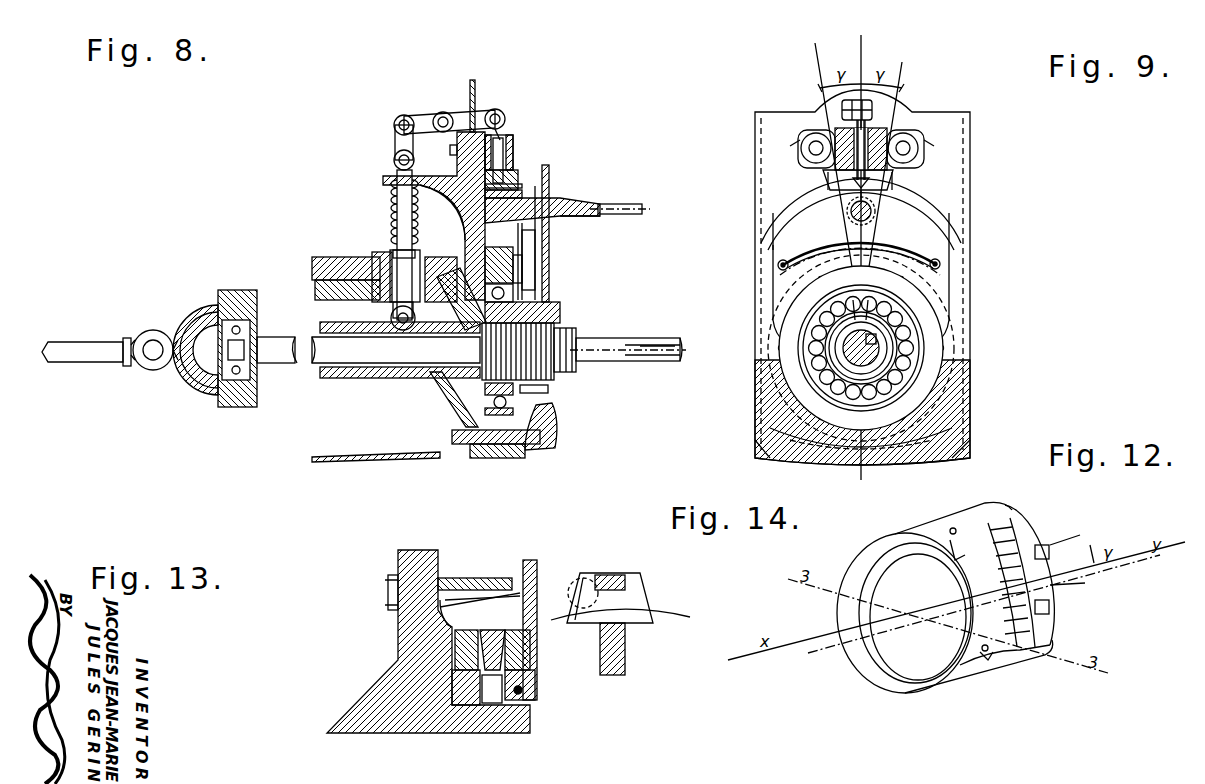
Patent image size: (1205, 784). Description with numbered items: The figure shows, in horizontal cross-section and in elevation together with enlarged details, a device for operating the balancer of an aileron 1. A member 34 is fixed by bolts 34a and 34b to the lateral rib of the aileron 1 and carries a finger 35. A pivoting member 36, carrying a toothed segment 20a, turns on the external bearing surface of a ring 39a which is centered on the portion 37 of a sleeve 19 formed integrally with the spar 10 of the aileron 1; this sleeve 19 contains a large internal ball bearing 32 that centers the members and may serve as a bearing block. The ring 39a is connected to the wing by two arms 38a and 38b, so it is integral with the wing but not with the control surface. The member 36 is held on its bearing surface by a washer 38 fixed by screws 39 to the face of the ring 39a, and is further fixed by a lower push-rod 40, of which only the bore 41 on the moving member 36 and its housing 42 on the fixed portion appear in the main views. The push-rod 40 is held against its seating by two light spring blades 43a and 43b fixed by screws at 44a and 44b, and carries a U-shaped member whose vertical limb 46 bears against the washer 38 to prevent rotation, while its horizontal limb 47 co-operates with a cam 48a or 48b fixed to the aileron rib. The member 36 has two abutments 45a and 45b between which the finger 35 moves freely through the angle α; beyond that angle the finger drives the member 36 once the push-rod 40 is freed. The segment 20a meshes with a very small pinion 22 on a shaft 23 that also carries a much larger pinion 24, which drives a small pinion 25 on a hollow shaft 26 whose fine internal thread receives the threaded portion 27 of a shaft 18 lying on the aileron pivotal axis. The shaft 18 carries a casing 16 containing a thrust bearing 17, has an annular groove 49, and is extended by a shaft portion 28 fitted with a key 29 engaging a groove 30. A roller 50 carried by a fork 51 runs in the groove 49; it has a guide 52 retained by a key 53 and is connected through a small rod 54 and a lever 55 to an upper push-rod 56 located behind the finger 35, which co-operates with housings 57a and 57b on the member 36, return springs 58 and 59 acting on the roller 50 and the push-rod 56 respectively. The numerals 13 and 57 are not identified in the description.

In FIG. 9, the aileron 1 is at (970, 125).
In FIG. 8, the spar 10 is at (322, 258).
In FIG. 8, the input shaft 13 is at (85, 350).
In FIG. 8, the casing 16 is at (200, 392).
In FIG. 8, the thrust bearing 17 is at (210, 305).
In FIG. 8, the shaft 18 is at (290, 370).
In FIG. 8, the sleeve 19 is at (338, 372).
In FIG. 8, the toothed segment 20a is at (560, 204).
In FIG. 9, the toothed segment 20a is at (771, 246).
In FIG. 12, the toothed segment 20a is at (1020, 530).
In FIG. 8, the pinion 22 is at (434, 231).
In FIG. 8, the shaft 23 is at (612, 208).
In FIG. 8, the pinion 24 is at (549, 290).
In FIG. 8, the pinion 25 is at (548, 388).
In FIG. 8, the hollow shaft 26 is at (545, 300).
In FIG. 8, the threaded portion 27 is at (565, 328).
In FIG. 8, the shaft portion 28 is at (628, 358).
In FIG. 8, the key 29 is at (650, 356).
In FIG. 8, the groove 30 is at (665, 340).
In FIG. 8, the ball bearing 32 is at (513, 396).
In FIG. 9, the ball bearing 32 is at (912, 352).
In FIG. 8, the member 34 is at (477, 110).
In FIG. 9, the member 34 is at (872, 130).
In FIG. 9, the bolt 34a is at (812, 138).
In FIG. 8, the bolt 34b is at (438, 156).
In FIG. 9, the bolt 34b is at (922, 145).
In FIG. 8, the finger 35 is at (522, 190).
In FIG. 9, the finger 35 is at (830, 185).
In FIG. 8, the member 36 is at (575, 217).
In FIG. 9, the member 36 is at (771, 255).
In FIG. 12, the member 36 is at (1000, 665).
In FIG. 8, the sleeve portion 37 is at (462, 420).
In FIG. 9, the sleeve portion 37 is at (928, 322).
In FIG. 13, the sleeve portion 37 is at (400, 660).
In FIG. 8, the washer 38 is at (538, 255).
In FIG. 9, the washer 38 is at (803, 325).
In FIG. 13, the washer 38 is at (532, 655).
In FIG. 8, the arm 38a is at (545, 440).
In FIG. 9, the arm 38a is at (770, 450).
In FIG. 9, the arm 38b is at (945, 445).
In FIG. 9, the screws 39 is at (905, 282).
In FIG. 13, the screws 39 is at (528, 690).
In FIG. 8, the ring 39a is at (549, 278).
In FIG. 9, the ring 39a is at (920, 310).
In FIG. 13, the ring 39a is at (520, 680).
In FIG. 13, the lower push-rod 40 is at (498, 705).
In FIG. 14, the lower push-rod 40 is at (612, 675).
In FIG. 8, the bore 41 is at (549, 240).
In FIG. 13, the bore 41 is at (420, 672).
In FIG. 8, the housing 42 is at (513, 268).
In FIG. 9, the housing 42 is at (775, 328).
In FIG. 13, the housing 42 is at (478, 705).
In FIG. 9, the spring blade 43a is at (815, 252).
In FIG. 13, the spring blade 43a is at (500, 598).
In FIG. 14, the spring blade 43a is at (660, 620).
In FIG. 9, the spring blade 43b is at (905, 245).
In FIG. 13, the spring blade 43b is at (518, 595).
In FIG. 14, the spring blade 43b is at (568, 600).
In FIG. 9, the screw fixing 44a is at (780, 270).
In FIG. 12, the screw fixing 44a is at (952, 528).
In FIG. 9, the screw fixing 44b is at (940, 264).
In FIG. 12, the screw fixing 44b is at (982, 660).
In FIG. 9, the abutment 45a is at (825, 178).
In FIG. 12, the abutment 45a is at (1050, 550).
In FIG. 8, the abutment 45b is at (522, 188).
In FIG. 9, the abutment 45b is at (895, 180).
In FIG. 12, the abutment 45b is at (1050, 607).
In FIG. 13, the vertical limb 46 is at (537, 575).
In FIG. 14, the vertical limb 46 is at (632, 590).
In FIG. 9, the horizontal limb 47 is at (810, 290).
In FIG. 12, the horizontal limb 47 is at (905, 585).
In FIG. 13, the horizontal limb 47 is at (452, 575).
In FIG. 14, the horizontal limb 47 is at (622, 575).
In FIG. 9, the cam 48a is at (848, 216).
In FIG. 13, the cam 48a is at (392, 612).
In FIG. 14, the cam 48a is at (583, 578).
In FIG. 9, the cam 48b is at (875, 205).
In FIG. 8, the annular groove 49 is at (395, 370).
In FIG. 8, the roller 50 is at (385, 318).
In FIG. 8, the fork 51 is at (385, 295).
In FIG. 8, the guide 52 is at (395, 250).
In FIG. 8, the key 53 is at (374, 258).
In FIG. 8, the small rod 54 is at (394, 135).
In FIG. 8, the lever 55 is at (440, 112).
In FIG. 8, the upper push-rod 56 is at (500, 120).
In FIG. 9, the upper push-rod 56 is at (870, 120).
In FIG. 8, the nut 57 is at (510, 178).
In FIG. 9, the housing 57a is at (808, 145).
In FIG. 12, the housing 57a is at (1085, 535).
In FIG. 9, the housing 57b is at (910, 150).
In FIG. 12, the housing 57b is at (1090, 582).
In FIG. 8, the return spring 58 is at (515, 140).
In FIG. 9, the return spring 58 is at (875, 140).
In FIG. 8, the return spring 59 is at (387, 190).